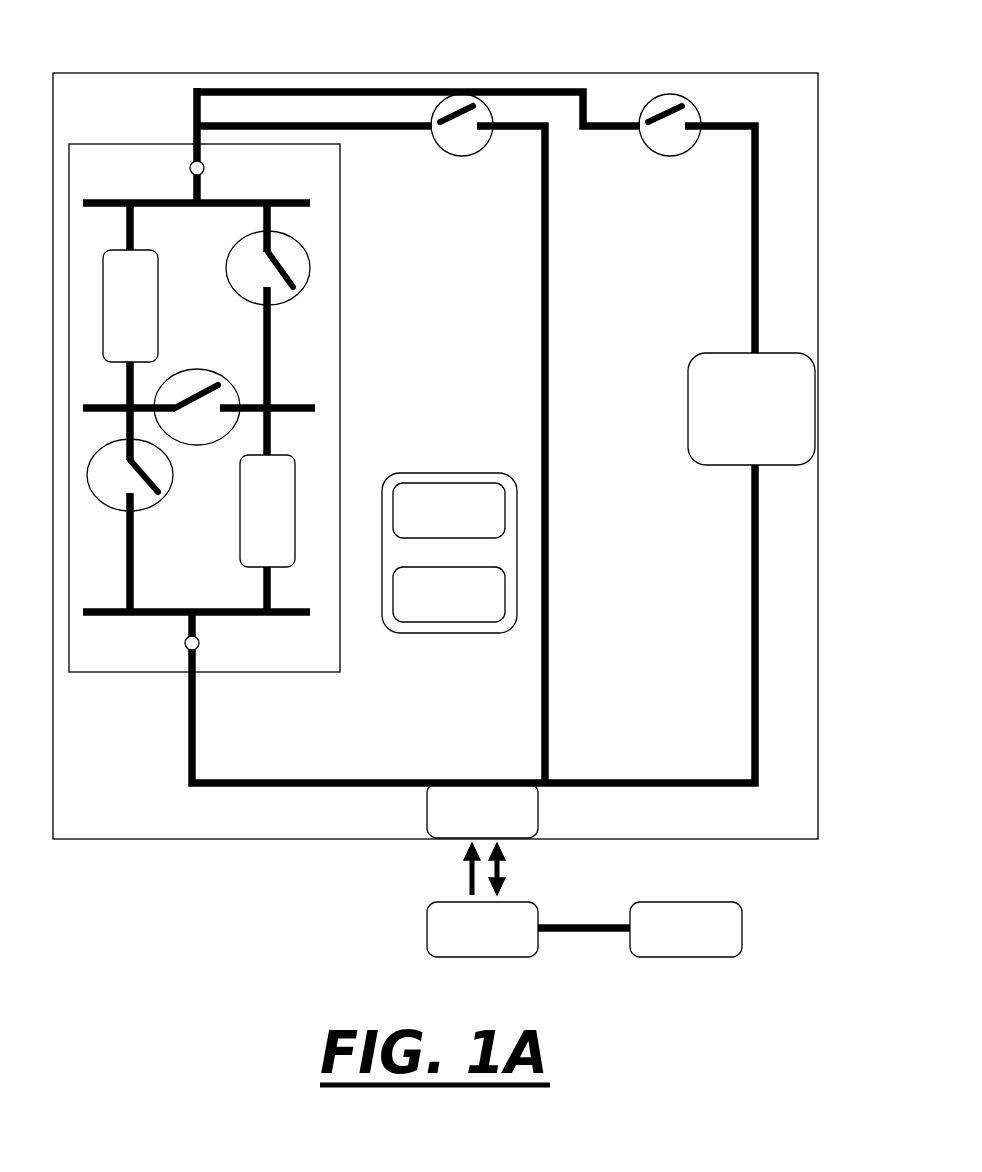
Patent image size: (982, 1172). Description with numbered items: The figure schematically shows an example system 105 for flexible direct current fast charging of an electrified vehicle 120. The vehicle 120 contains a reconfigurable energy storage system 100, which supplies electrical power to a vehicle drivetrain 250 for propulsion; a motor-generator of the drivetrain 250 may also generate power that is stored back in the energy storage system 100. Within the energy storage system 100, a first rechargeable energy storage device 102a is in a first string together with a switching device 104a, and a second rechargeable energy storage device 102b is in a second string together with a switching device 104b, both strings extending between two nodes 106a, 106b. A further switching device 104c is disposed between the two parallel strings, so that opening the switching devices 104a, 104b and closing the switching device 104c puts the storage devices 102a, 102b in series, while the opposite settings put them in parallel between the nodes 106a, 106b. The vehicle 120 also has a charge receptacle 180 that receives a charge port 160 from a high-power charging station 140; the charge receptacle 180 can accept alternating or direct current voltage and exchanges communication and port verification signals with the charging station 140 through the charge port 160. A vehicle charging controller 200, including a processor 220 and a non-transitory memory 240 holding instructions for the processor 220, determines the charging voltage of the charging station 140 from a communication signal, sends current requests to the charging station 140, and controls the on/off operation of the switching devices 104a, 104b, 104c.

The system 105 is at (178, 54).
The electrified vehicle 120 is at (633, 72).
The reconfigurable energy storage system 100 is at (341, 270).
The node 106a is at (190, 167).
The node 106b is at (200, 646).
The first rechargeable energy storage device 102a is at (130, 306).
The second rechargeable energy storage device 102b is at (267, 511).
The switching device 104a is at (145, 510).
The switching device 104b is at (258, 237).
The switching device 104c is at (186, 372).
The vehicle charging controller 200 is at (420, 473).
The processor 220 is at (449, 510).
The non-transitory memory 240 is at (449, 594).
The vehicle drivetrain 250 is at (751, 409).
The charge receptacle 180 is at (482, 810).
The charge port 160 is at (528, 900).
The charging station 140 is at (686, 929).